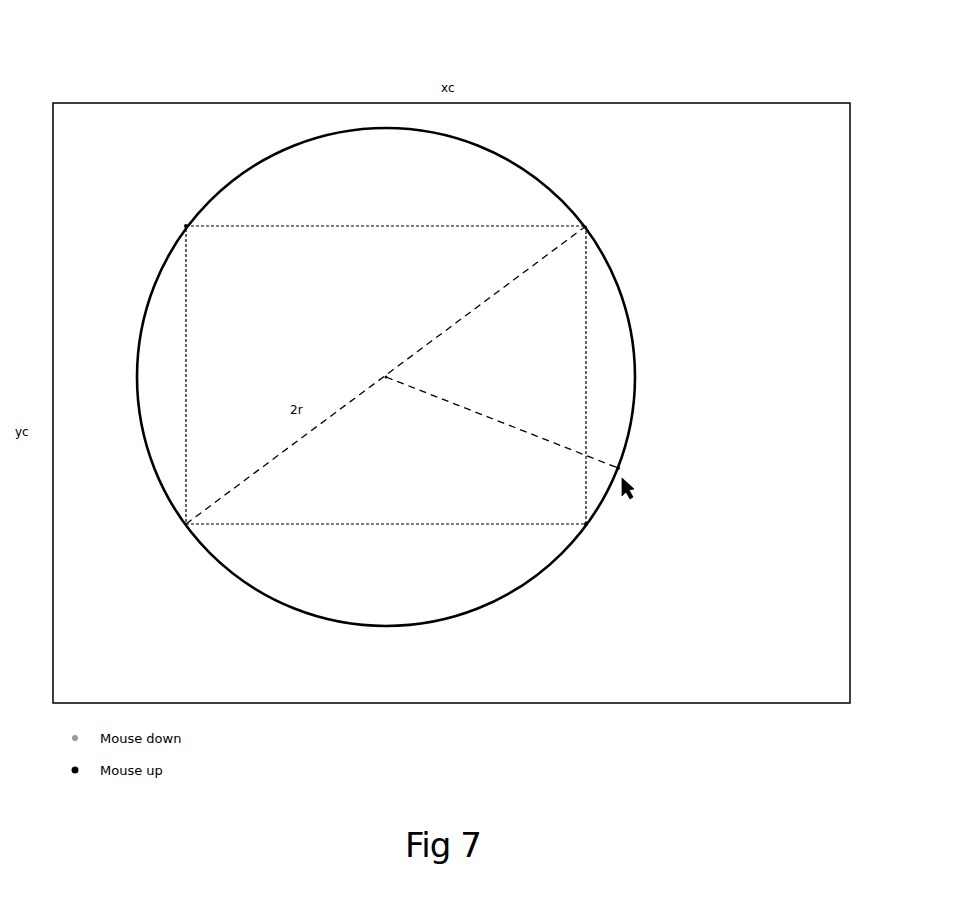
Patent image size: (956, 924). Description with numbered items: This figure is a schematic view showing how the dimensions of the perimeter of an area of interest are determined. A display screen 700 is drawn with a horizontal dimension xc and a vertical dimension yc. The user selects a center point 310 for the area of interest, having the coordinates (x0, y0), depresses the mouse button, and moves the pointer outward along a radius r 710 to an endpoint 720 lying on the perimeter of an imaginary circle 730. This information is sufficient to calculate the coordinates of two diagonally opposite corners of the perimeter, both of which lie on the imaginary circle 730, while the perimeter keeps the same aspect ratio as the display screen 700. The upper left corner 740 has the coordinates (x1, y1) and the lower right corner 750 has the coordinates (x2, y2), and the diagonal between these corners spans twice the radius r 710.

The display screen 700 is at (181, 103).
The imaginary circle 730 is at (553, 190).
The center point 310 is at (386, 377).
The radius 710 is at (520, 430).
The upper left corner 740 is at (187, 228).
The endpoint 720 is at (618, 468).
The lower right corner 750 is at (586, 524).